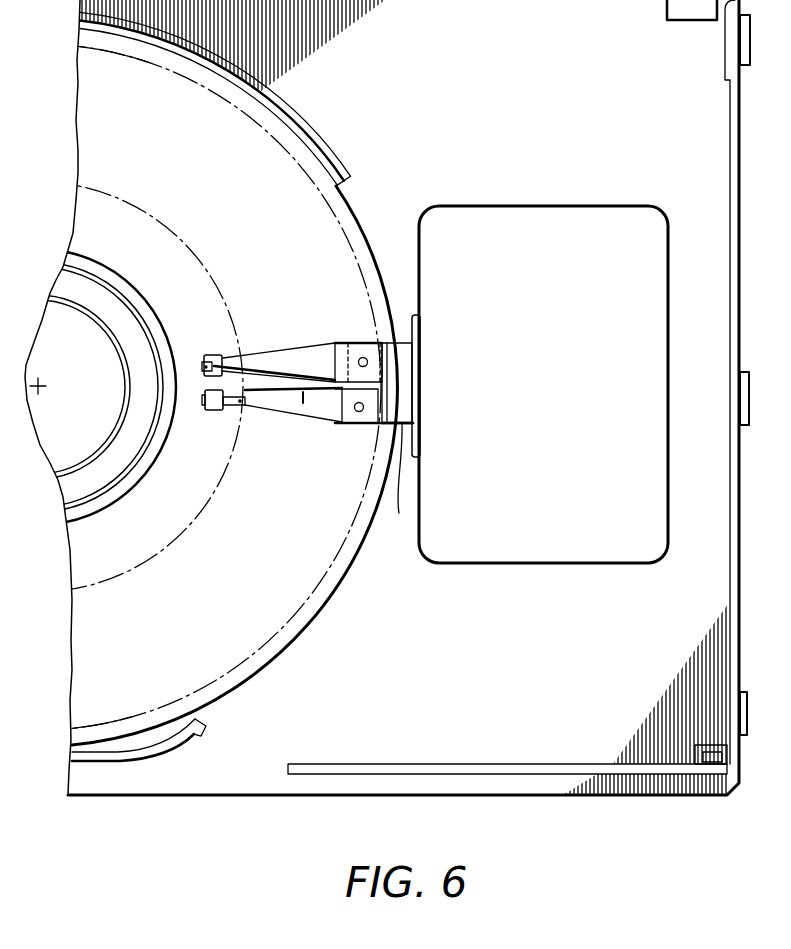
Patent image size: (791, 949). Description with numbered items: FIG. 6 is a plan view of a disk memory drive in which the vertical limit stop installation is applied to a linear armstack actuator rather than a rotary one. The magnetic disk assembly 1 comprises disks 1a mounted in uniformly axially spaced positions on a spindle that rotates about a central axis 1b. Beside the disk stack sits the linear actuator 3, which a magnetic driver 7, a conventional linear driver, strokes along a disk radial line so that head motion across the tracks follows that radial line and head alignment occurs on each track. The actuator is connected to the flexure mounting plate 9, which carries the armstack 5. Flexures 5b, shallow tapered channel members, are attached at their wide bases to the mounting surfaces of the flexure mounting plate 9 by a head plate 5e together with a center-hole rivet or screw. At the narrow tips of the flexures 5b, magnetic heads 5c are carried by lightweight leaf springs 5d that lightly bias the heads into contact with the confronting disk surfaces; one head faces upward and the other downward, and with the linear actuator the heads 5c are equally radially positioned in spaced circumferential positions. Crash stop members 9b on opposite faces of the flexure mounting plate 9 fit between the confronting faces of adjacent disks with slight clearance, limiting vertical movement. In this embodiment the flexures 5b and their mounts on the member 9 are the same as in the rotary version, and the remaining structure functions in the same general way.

The magnetic disk assembly 1 is at (68, 660).
The disks 1a is at (92, 554).
The central axis 1b is at (45, 383).
The linear actuator 3 is at (402, 333).
The armstack 5 is at (357, 336).
The flexures 5b is at (297, 365).
The magnetic heads 5c is at (203, 394).
The leaf springs 5d is at (233, 412).
The head plate 5e is at (348, 413).
The magnetic driver 7 is at (565, 200).
The flexure mounting plate 9 is at (384, 428).
The crash stop members 9b is at (394, 483).